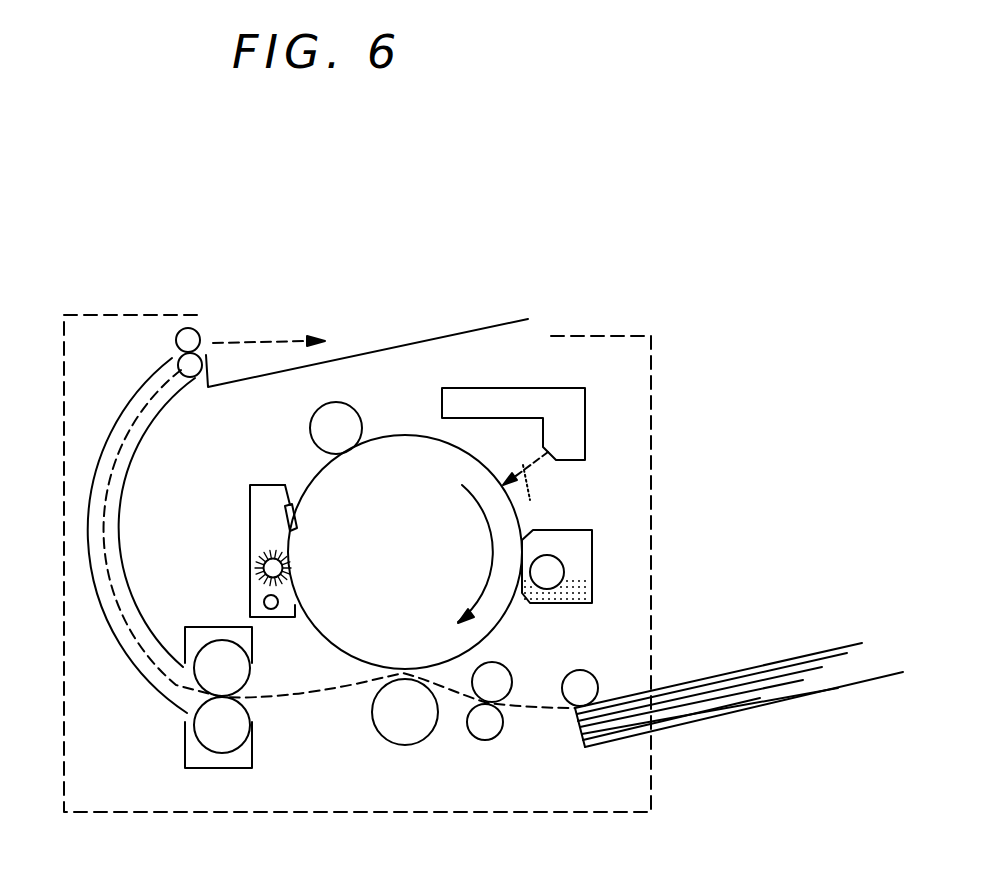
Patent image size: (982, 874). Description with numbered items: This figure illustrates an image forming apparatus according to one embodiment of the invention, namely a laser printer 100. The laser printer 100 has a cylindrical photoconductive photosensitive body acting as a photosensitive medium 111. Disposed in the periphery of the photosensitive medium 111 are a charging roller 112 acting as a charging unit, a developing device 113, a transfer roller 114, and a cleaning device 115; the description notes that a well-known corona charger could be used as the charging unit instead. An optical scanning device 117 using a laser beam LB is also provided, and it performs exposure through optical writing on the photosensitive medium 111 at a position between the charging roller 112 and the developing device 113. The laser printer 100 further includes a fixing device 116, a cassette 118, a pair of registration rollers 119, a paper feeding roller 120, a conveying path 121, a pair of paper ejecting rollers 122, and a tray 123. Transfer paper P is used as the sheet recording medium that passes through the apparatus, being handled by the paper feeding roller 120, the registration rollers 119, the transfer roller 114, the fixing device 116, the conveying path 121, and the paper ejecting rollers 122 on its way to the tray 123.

The laser printer 100 is at (670, 367).
The photosensitive medium 111 is at (395, 437).
The charging roller 112 is at (312, 417).
The developing device 113 is at (587, 528).
The transfer roller 114 is at (413, 735).
The cleaning device 115 is at (262, 485).
The fixing device 116 is at (253, 755).
The optical scanning device 117 is at (507, 388).
The cassette 118 is at (718, 718).
The pair of registration rollers 119 is at (502, 718).
The paper feeding roller 120 is at (585, 670).
The conveying path 121 is at (90, 522).
The pair of paper ejecting rollers 122 is at (208, 362).
The tray 123 is at (443, 337).
The laser beam LB is at (534, 481).
The transfer paper P is at (715, 683).